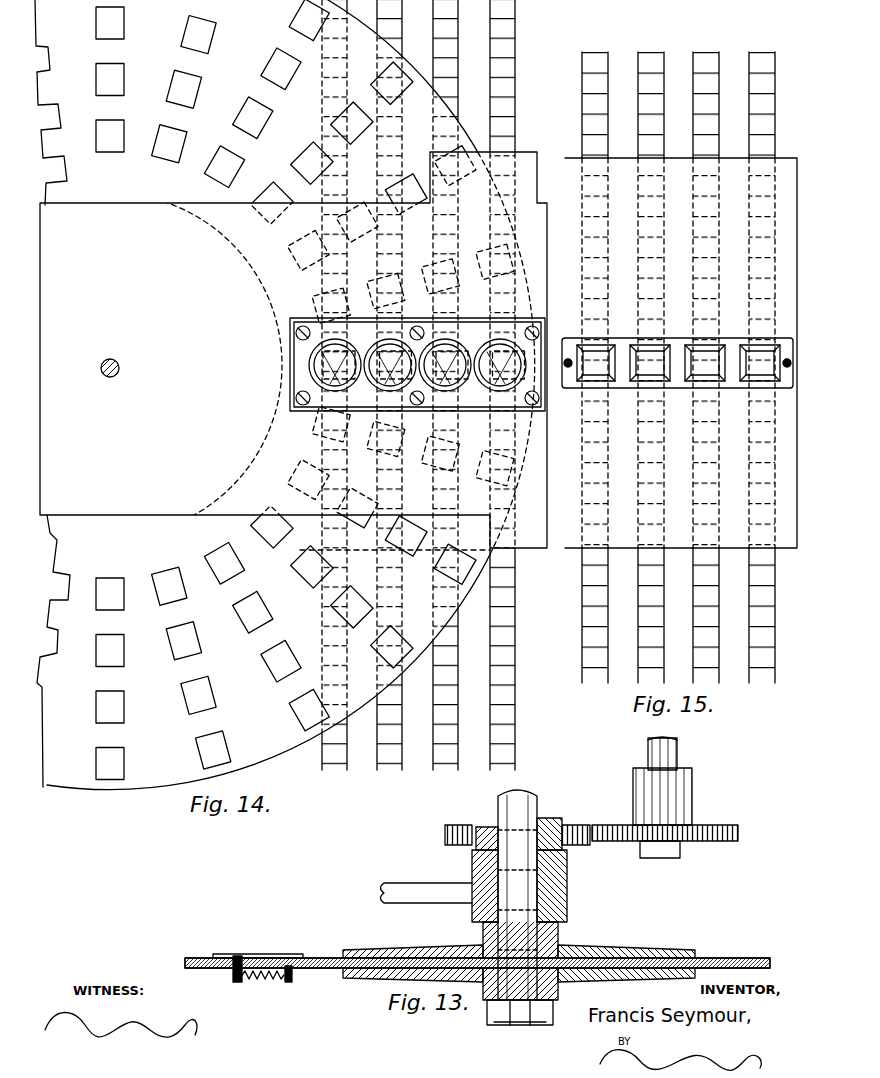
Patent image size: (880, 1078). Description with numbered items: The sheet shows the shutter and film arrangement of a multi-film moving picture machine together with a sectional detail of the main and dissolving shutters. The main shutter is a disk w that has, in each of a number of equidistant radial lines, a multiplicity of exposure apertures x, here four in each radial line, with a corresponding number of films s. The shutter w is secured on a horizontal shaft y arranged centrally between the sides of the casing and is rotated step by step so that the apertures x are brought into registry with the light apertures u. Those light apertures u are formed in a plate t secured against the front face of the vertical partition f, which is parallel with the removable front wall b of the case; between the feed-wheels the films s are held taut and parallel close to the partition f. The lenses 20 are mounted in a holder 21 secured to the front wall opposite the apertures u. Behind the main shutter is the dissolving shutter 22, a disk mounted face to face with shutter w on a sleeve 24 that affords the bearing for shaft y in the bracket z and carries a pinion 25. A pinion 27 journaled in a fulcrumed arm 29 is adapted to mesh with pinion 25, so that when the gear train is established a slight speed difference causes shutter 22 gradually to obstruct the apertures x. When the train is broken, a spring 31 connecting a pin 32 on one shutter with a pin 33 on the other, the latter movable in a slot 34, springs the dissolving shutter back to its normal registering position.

In FIG. 14, the disk w is at (285, 395).
In FIG. 13, the disk w is at (318, 970).
In FIG. 14, the apertures x is at (205, 682).
In FIG. 14, the film s is at (380, 751).
In FIG. 15, the film s is at (640, 624).
In FIG. 14, the vertical partition f is at (536, 540).
In FIG. 15, the vertical partition f is at (790, 520).
In FIG. 14, the removable front wall b is at (196, 365).
In FIG. 14, the horizontal shaft y is at (119, 368).
In FIG. 13, the horizontal shaft y is at (538, 802).
In FIG. 14, the lenses 20 is at (417, 373).
In FIG. 14, the holder 21 is at (480, 404).
In FIG. 15, the plate t is at (679, 388).
In FIG. 15, the apertures u is at (650, 363).
In FIG. 13, the dissolving shutter 22 is at (318, 956).
In FIG. 13, the sleeve 24 is at (558, 934).
In FIG. 13, the pinion 25 is at (452, 846).
In FIG. 13, the pinion 27 is at (617, 846).
In FIG. 13, the arm 29 is at (677, 748).
In FIG. 13, the bracket z is at (567, 900).
In FIG. 13, the spring 31 is at (258, 979).
In FIG. 13, the pin 32 is at (289, 984).
In FIG. 13, the pin 33 is at (237, 984).
In FIG. 13, the slot 34 is at (216, 968).